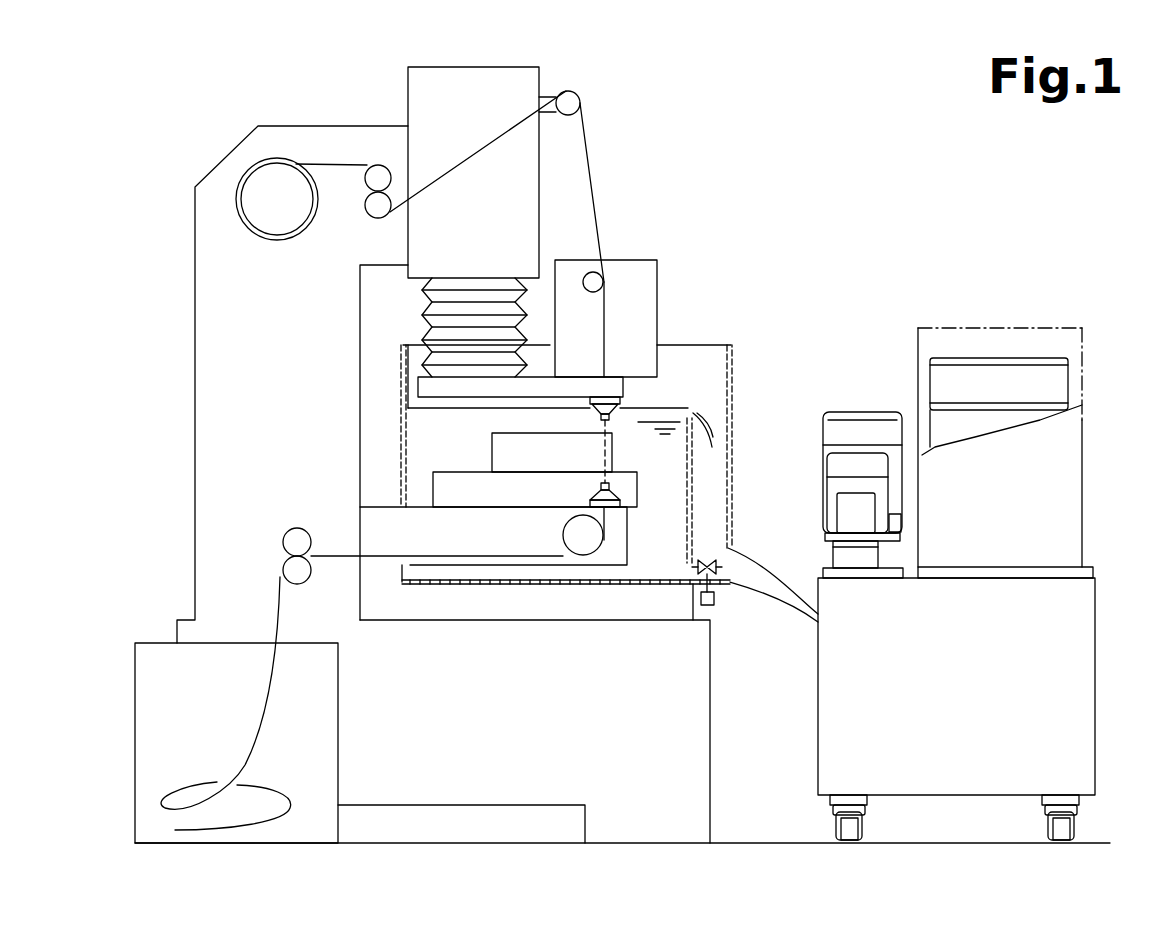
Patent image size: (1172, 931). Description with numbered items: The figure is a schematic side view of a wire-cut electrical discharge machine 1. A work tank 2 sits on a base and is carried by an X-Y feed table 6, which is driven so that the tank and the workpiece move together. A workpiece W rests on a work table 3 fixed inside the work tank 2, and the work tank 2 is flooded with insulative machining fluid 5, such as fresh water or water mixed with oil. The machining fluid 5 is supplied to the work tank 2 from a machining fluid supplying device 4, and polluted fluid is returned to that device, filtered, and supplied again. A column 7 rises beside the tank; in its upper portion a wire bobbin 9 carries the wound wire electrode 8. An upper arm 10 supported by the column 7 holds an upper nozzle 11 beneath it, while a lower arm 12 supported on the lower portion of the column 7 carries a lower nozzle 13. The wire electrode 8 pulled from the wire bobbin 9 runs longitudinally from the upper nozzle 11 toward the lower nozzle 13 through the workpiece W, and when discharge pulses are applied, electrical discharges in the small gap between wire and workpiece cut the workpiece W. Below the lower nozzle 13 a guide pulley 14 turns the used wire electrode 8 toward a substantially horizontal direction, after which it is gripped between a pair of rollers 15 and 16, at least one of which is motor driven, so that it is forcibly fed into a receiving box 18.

The wire electric discharge machine body 1 is at (557, 739).
The work tank 2 is at (398, 375).
The work table 3 is at (453, 492).
The machining fluid supplying device 4 is at (1088, 518).
The machining fluid 5 is at (668, 472).
The X-Y feed table 6 is at (667, 612).
The column 7 is at (222, 372).
The wire electrode 8 is at (482, 147).
The wire bobbin 9 is at (273, 197).
The upper arm 10 is at (570, 388).
The upper nozzle 11 is at (622, 408).
The lower arm 12 is at (493, 540).
The lower nozzle 13 is at (620, 495).
The guide pulley 14 is at (580, 540).
The roller 15 is at (298, 540).
The roller 16 is at (297, 572).
The receiving box 18 is at (340, 748).
The workpiece W is at (512, 452).